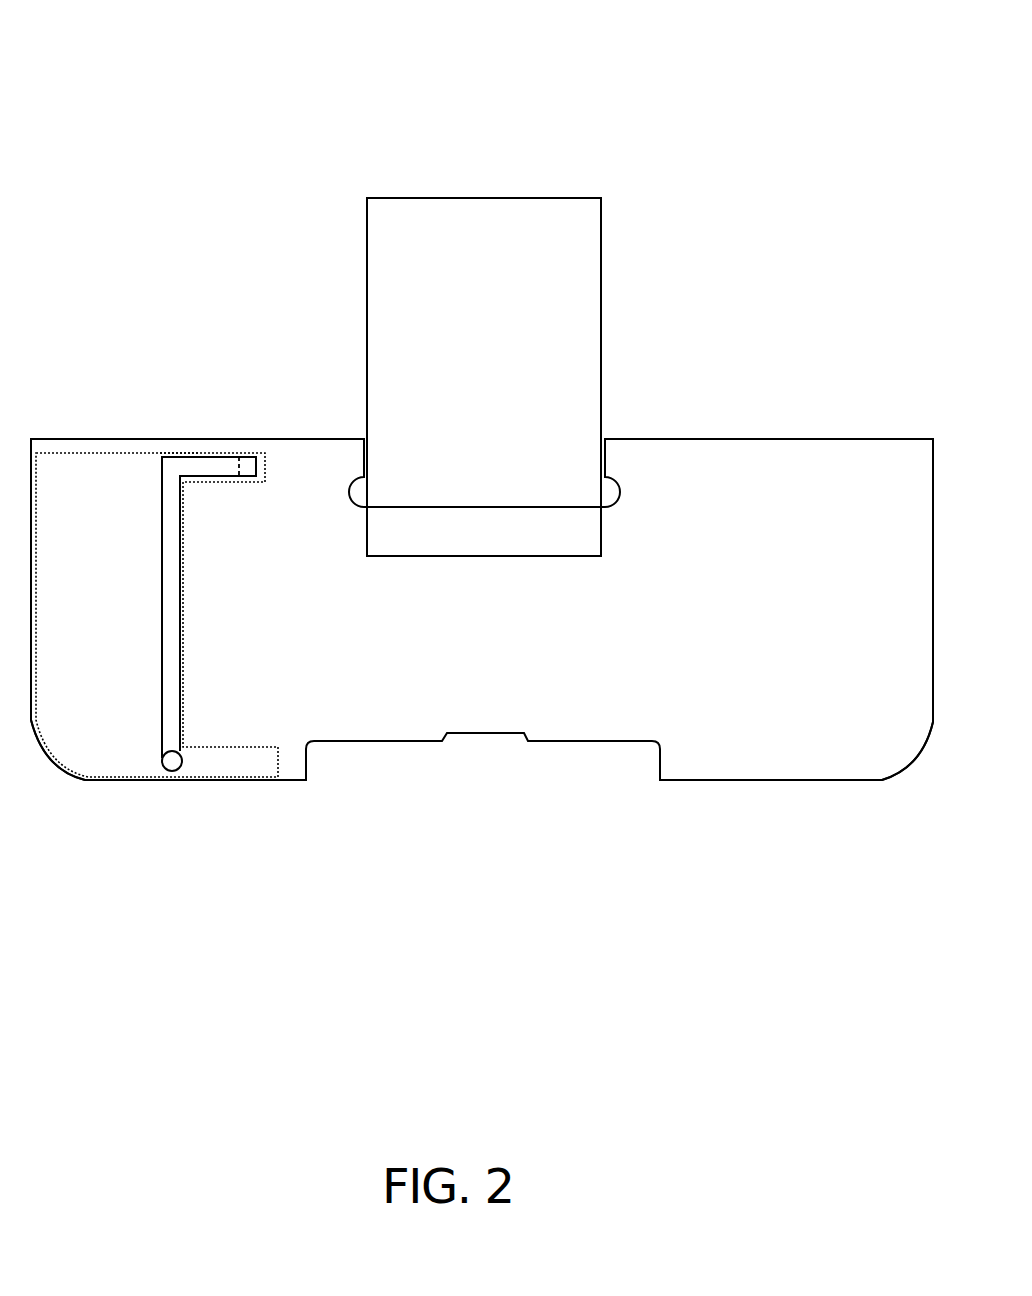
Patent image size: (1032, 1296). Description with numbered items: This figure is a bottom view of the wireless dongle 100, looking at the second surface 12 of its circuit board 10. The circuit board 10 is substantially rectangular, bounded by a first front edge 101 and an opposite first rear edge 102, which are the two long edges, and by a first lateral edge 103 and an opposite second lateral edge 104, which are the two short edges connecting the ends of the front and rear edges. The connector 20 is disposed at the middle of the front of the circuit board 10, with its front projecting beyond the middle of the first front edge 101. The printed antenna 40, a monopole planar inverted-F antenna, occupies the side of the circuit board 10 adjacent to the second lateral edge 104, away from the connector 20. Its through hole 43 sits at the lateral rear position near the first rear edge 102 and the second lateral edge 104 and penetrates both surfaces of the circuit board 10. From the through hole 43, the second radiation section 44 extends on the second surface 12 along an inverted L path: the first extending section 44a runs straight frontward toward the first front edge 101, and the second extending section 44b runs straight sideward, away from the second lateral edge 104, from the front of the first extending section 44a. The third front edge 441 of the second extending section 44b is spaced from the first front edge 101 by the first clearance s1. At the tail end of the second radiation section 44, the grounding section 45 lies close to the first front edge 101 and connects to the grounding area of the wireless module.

The wireless dongle 100 is at (102, 50).
The circuit board 10 is at (742, 452).
The first front edge 101 is at (350, 438).
The second surface 12 is at (820, 455).
The first rear edge 102 is at (750, 782).
The first lateral edge 103 is at (933, 680).
The second lateral edge 104 is at (30, 722).
The connector 20 is at (456, 212).
The printed antenna 40 is at (38, 542).
The through hole 43 is at (170, 771).
The second radiation section 44 is at (222, 468).
The first extending section 44a is at (171, 603).
The second extending section 44b is at (192, 468).
The third front edge 441 is at (246, 464).
The grounding section 45 is at (248, 467).
The first clearance s1 is at (171, 455).